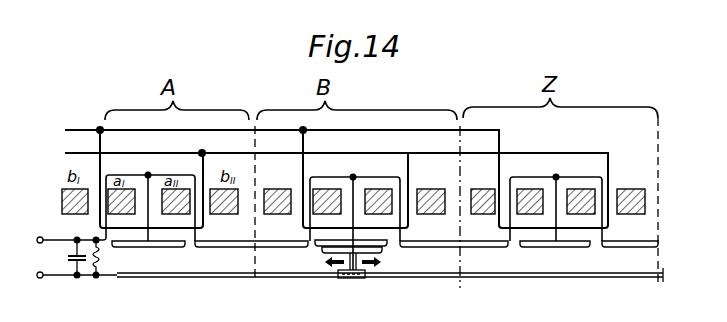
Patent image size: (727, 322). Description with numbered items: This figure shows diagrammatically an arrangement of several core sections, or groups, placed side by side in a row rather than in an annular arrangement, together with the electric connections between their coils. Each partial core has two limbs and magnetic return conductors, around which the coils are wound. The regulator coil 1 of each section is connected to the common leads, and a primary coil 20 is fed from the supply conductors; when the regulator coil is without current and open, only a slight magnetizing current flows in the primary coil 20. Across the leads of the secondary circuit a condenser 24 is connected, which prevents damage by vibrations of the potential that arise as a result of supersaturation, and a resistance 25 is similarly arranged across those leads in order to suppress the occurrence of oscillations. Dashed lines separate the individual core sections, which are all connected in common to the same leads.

The regulator coil 1 is at (137, 175).
The primary coil 20 is at (302, 167).
The condenser 24 is at (76, 264).
The resistance 25 is at (98, 265).